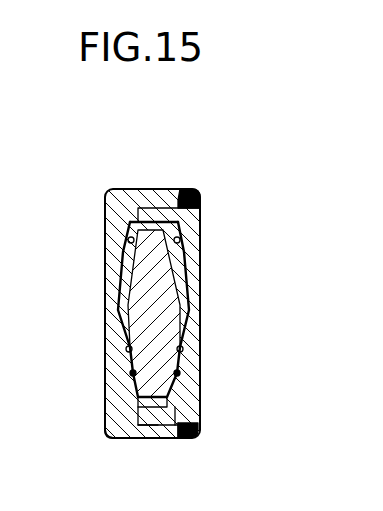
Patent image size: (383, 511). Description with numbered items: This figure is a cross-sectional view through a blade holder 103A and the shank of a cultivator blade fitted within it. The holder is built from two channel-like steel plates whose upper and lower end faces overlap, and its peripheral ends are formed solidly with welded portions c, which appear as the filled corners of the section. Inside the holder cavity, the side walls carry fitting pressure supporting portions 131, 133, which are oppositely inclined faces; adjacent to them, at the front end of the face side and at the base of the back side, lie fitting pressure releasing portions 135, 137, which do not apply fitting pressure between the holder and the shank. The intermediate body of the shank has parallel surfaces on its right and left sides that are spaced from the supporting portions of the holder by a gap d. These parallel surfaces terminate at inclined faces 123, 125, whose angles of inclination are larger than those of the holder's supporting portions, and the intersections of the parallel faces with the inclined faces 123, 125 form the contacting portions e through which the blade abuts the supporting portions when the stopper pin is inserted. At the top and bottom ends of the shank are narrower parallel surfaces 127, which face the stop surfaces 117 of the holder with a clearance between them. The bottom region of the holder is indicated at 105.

The housing 103A is at (151, 188).
The welded portions c is at (196, 192).
The gap d is at (119, 302).
The contacting portions e is at (131, 374).
The housing bottom 105 is at (109, 433).
The stop surfaces 117 is at (146, 438).
The inclined face 123 is at (137, 404).
The inclined face 125 is at (172, 407).
The parallel surfaces 127 is at (179, 436).
The fitting pressure supporting portion 131 is at (126, 349).
The fitting pressure supporting portion 133 is at (183, 349).
The fitting pressure releasing portion 135 is at (128, 240).
The fitting pressure releasing portion 137 is at (180, 240).